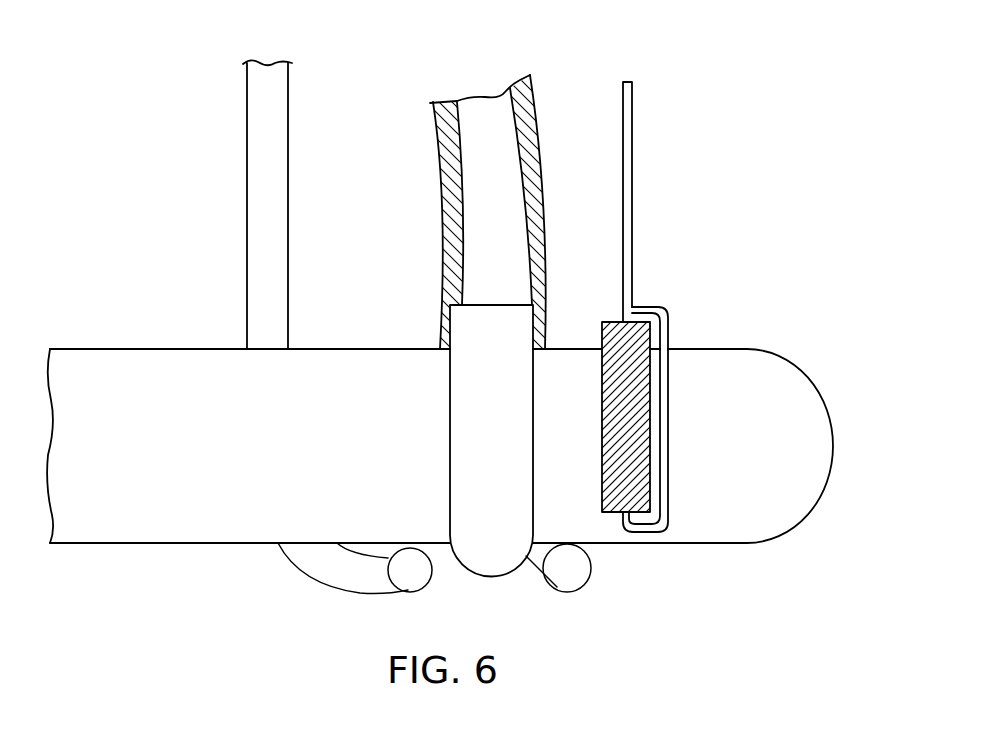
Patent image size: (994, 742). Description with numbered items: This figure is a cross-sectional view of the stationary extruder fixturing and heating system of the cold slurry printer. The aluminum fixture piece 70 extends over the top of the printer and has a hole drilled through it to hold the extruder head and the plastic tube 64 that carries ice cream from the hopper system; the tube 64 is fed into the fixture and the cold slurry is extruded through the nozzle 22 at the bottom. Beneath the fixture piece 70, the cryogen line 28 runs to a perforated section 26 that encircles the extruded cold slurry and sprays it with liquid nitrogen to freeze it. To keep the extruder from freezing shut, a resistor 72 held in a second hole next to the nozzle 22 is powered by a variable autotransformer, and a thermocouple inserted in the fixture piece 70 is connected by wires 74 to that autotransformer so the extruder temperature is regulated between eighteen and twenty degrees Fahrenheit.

The nozzle 22 is at (450, 430).
The perforated section 26 is at (582, 568).
The cryogen line 28 is at (258, 137).
The tube 64 is at (490, 192).
The aluminum fixture piece 70 is at (168, 350).
The resistor 72 is at (607, 318).
The wires 74 is at (628, 175).